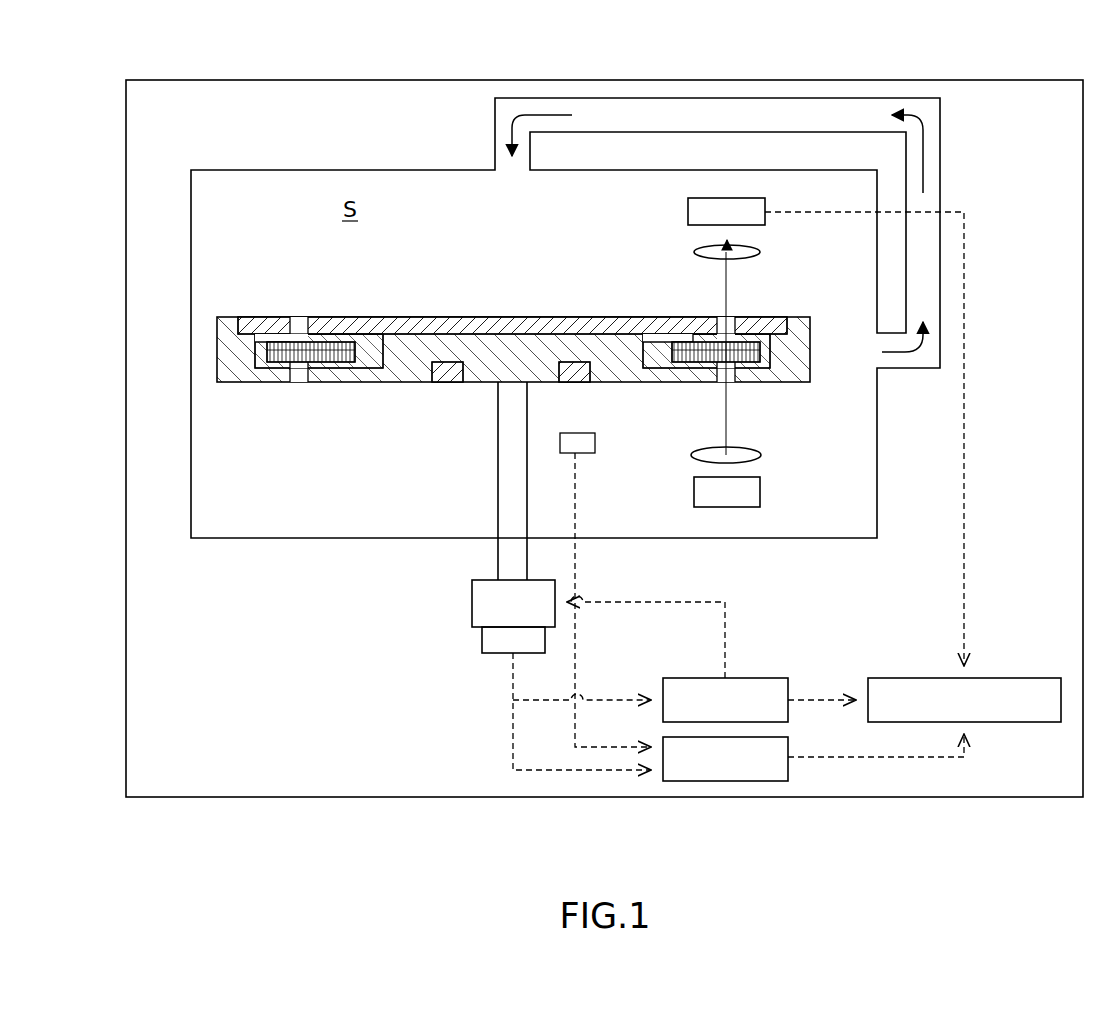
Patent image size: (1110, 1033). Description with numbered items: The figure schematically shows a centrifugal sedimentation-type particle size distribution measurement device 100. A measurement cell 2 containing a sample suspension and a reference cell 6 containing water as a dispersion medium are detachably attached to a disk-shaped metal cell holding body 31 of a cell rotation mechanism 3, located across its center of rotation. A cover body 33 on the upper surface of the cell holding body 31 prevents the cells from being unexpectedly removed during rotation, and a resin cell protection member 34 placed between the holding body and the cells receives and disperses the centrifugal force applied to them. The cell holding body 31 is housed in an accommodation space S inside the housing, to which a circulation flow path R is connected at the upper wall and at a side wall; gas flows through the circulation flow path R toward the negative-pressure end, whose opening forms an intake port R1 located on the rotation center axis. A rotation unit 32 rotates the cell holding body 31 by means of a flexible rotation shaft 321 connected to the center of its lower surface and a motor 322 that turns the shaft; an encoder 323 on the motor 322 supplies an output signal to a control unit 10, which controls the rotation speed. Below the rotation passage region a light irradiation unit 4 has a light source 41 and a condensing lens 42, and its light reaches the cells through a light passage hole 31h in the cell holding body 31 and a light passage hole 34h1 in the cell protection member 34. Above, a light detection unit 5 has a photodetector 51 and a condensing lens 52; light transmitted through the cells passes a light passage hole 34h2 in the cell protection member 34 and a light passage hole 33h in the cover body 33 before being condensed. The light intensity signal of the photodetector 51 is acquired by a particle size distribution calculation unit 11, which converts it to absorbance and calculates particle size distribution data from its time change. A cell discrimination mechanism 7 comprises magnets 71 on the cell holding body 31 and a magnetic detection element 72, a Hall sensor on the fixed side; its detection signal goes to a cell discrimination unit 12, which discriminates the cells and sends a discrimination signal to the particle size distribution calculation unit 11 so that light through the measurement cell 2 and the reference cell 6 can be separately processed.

The centrifugal sedimentation-type particle size distribution measurement device 100 is at (358, 80).
The circulation flow path R is at (942, 152).
The intake port R1 is at (519, 180).
The cell rotation mechanism 3 is at (466, 368).
The cell holding body 31 is at (444, 375).
The light passage hole 31h is at (290, 376).
The cover body 33 is at (510, 283).
The light passage hole 33h is at (289, 330).
The cell protection member 34 is at (488, 353).
The light passage hole 34h1 is at (262, 366).
The light passage hole 34h2 is at (258, 338).
The reference cell 6 is at (355, 344).
The measurement cell 2 is at (672, 343).
The cell discrimination mechanism 7 is at (514, 447).
The magnets 71 is at (447, 383).
The magnetic detection element 72 is at (583, 455).
The rotation unit 32 is at (439, 538).
The rotation shaft 321 is at (497, 524).
The motor 322 is at (472, 605).
The encoder 323 is at (495, 653).
The light detection unit 5 is at (679, 226).
The photodetector 51 is at (686, 212).
The condensing lens 52 is at (695, 244).
The light irradiation unit 4 is at (771, 484).
The light source 41 is at (754, 495).
The condensing lens 42 is at (762, 458).
The control unit 10 is at (758, 678).
The particle size distribution calculation unit 11 is at (998, 722).
The cell discrimination unit 12 is at (723, 781).